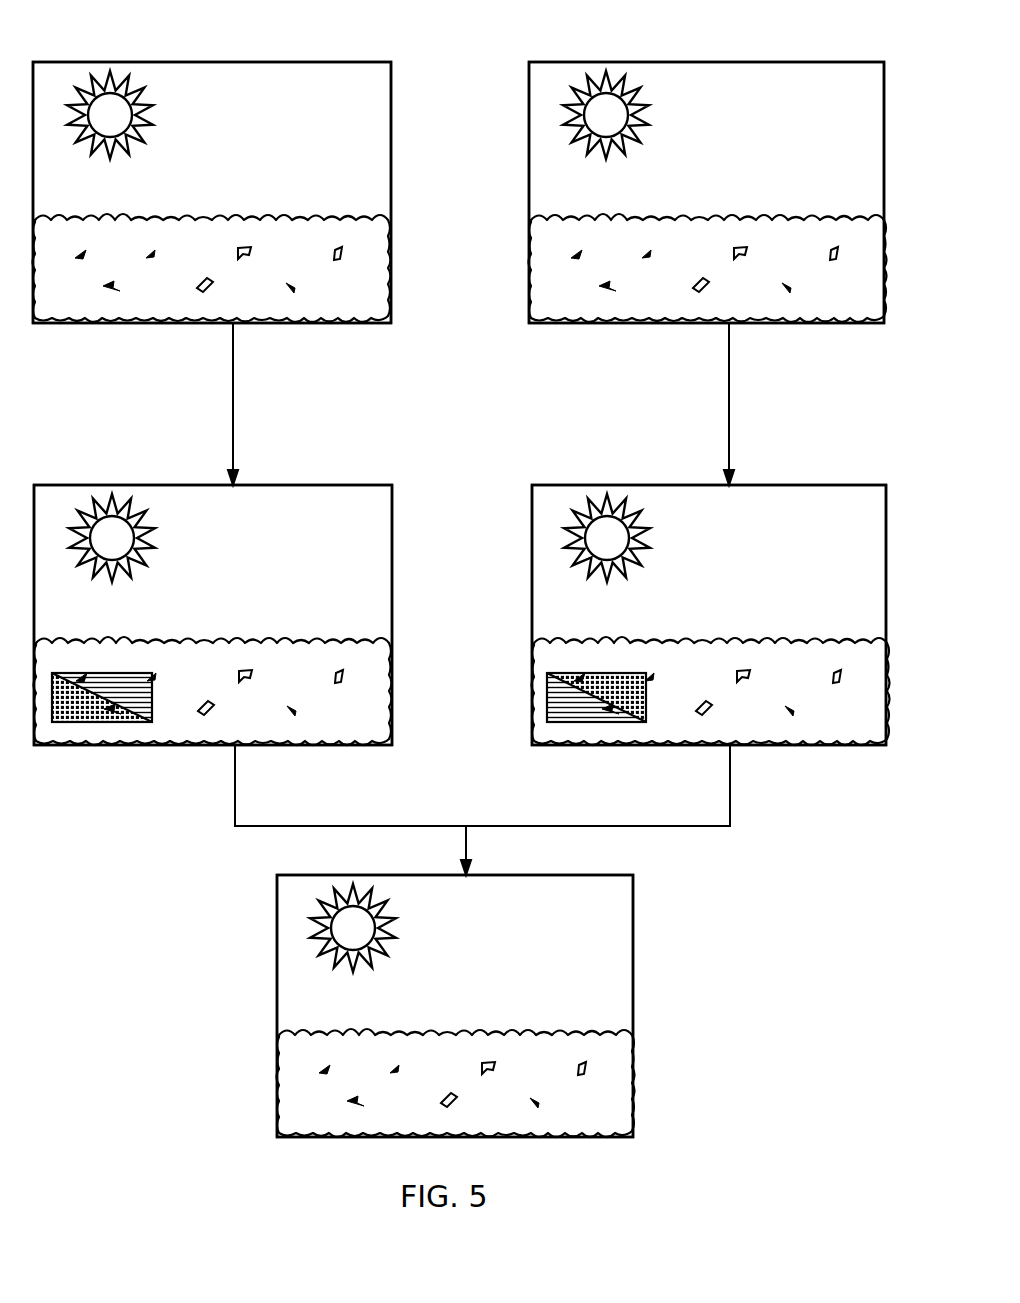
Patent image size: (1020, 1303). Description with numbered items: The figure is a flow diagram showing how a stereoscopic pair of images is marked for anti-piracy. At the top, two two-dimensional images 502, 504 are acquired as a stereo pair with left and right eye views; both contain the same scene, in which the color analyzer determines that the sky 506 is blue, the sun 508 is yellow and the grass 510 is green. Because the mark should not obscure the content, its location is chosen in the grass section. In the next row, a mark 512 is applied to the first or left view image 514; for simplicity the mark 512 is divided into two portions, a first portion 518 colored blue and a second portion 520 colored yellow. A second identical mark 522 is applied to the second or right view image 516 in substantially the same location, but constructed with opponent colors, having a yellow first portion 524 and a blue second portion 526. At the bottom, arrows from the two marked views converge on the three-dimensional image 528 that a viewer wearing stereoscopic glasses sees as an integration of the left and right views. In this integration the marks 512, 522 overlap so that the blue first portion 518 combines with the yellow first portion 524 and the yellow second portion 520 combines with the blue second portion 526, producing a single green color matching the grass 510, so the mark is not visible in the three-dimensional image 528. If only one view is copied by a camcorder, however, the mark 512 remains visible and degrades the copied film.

The two-dimensional image 502 is at (233, 62).
The two-dimensional image 504 is at (728, 62).
The sky 506 is at (350, 107).
The sun 508 is at (92, 126).
The grass 510 is at (361, 297).
The mark 512 is at (153, 703).
The first or left view image 514 is at (283, 485).
The second or right view image 516 is at (779, 485).
The first portion 518 is at (118, 690).
The second portion 520 is at (67, 713).
The second identical mark 522 is at (647, 703).
The first portion 524 is at (617, 690).
The second portion 526 is at (560, 713).
The 3D image 528 is at (633, 1003).